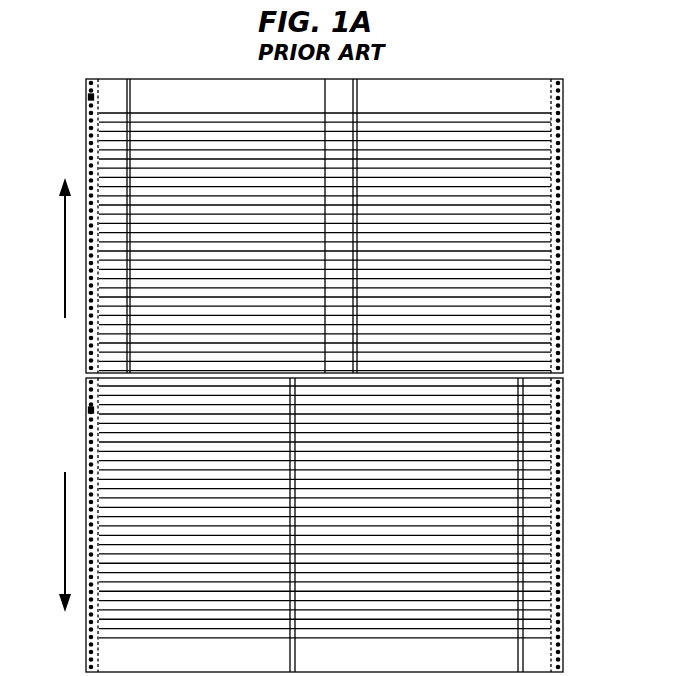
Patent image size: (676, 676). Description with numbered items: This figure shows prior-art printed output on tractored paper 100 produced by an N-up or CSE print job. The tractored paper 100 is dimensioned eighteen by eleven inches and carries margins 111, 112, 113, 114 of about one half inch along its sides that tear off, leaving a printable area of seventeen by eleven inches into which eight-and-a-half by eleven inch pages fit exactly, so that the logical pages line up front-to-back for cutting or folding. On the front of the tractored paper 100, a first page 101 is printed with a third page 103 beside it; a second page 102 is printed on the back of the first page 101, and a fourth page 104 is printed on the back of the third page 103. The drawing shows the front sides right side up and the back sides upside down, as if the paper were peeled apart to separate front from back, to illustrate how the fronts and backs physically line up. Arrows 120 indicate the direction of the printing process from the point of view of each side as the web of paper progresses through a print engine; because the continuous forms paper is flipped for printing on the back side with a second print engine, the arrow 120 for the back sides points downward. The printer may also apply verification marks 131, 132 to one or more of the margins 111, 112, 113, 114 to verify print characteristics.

The tractored paper 100 is at (452, 46).
The first page 101 is at (172, 118).
The second page 102 is at (140, 608).
The third page 103 is at (506, 118).
The fourth page 104 is at (505, 608).
The margin 111 is at (86, 145).
The margin 112 is at (564, 138).
The margin 113 is at (86, 445).
The margin 114 is at (564, 468).
The arrows 120 is at (65, 243).
The verification mark 131 is at (88, 96).
The verification mark 132 is at (88, 409).